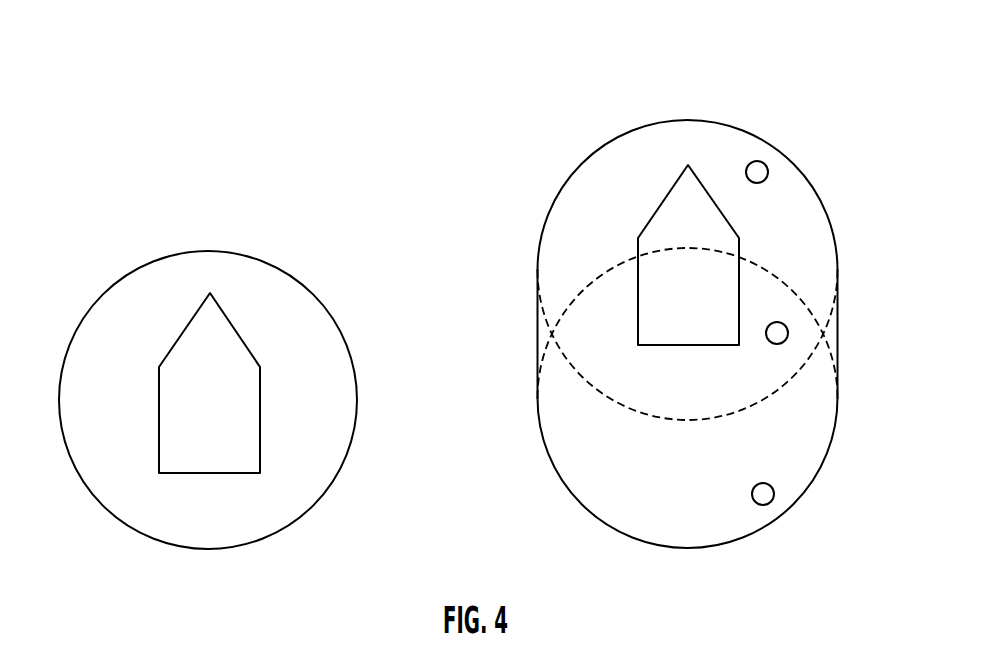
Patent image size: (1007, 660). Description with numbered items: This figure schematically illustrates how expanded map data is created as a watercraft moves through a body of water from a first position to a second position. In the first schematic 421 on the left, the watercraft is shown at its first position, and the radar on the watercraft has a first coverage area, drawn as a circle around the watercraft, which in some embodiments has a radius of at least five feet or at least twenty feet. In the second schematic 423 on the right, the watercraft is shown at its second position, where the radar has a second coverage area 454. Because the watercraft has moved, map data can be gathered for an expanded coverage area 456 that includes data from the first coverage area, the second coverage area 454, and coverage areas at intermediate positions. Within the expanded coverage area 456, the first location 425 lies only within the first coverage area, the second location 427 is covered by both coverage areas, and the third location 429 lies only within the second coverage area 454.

The first schematic 421 is at (88, 168).
The second schematic 423 is at (513, 81).
The first location 425 is at (774, 494).
The second location 427 is at (788, 333).
The third location 429 is at (768, 172).
The second coverage area 454 is at (847, 308).
The expanded coverage area 456 is at (528, 394).